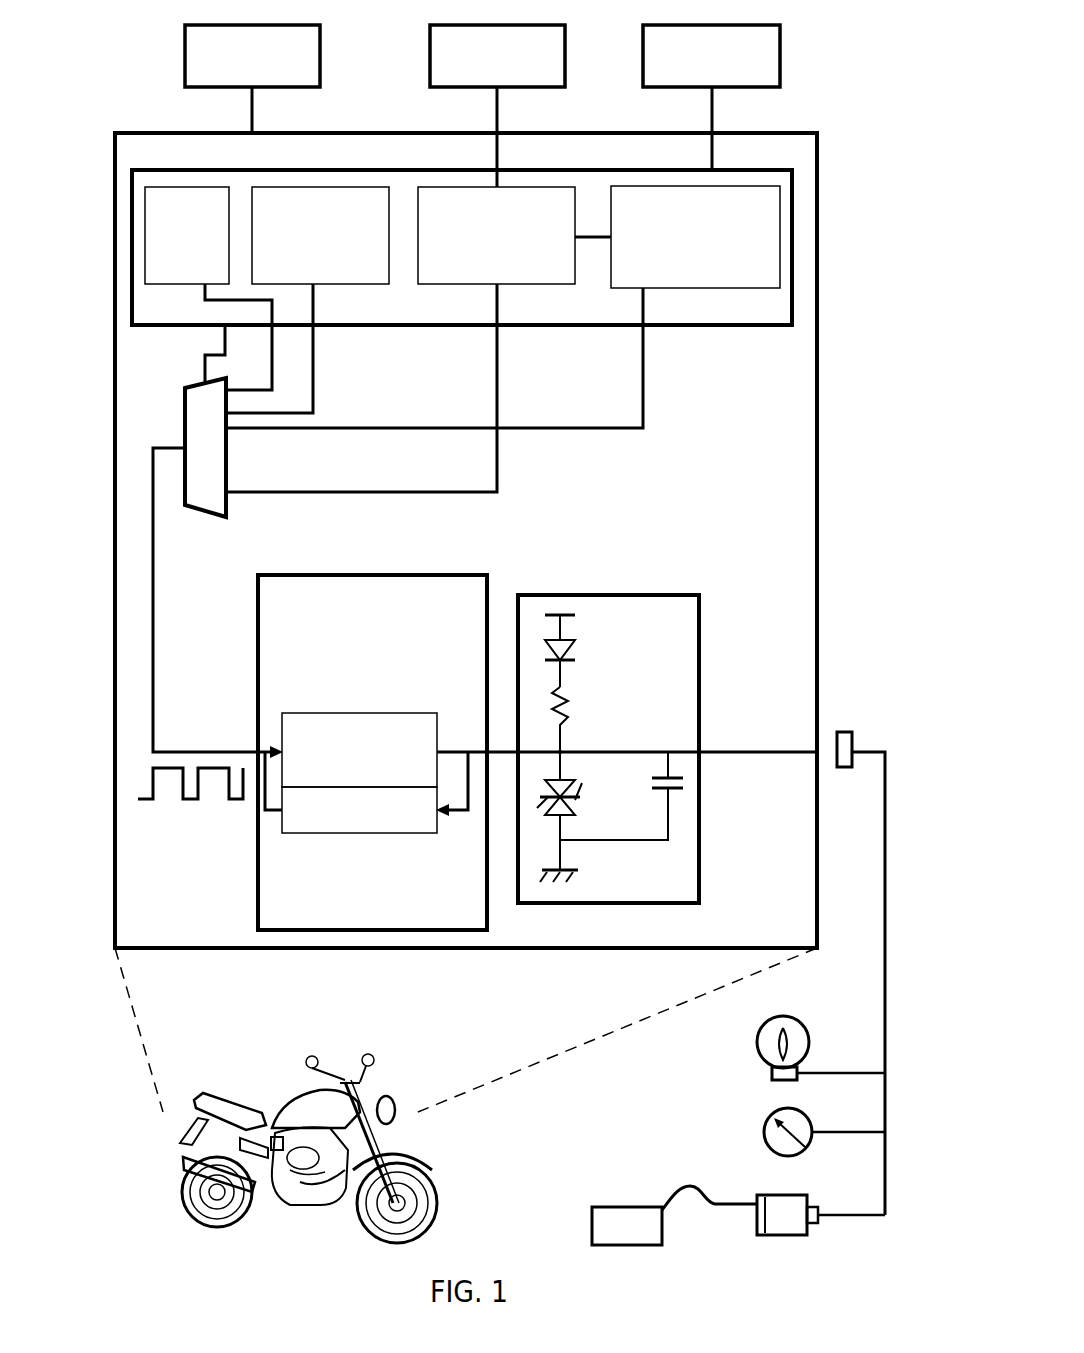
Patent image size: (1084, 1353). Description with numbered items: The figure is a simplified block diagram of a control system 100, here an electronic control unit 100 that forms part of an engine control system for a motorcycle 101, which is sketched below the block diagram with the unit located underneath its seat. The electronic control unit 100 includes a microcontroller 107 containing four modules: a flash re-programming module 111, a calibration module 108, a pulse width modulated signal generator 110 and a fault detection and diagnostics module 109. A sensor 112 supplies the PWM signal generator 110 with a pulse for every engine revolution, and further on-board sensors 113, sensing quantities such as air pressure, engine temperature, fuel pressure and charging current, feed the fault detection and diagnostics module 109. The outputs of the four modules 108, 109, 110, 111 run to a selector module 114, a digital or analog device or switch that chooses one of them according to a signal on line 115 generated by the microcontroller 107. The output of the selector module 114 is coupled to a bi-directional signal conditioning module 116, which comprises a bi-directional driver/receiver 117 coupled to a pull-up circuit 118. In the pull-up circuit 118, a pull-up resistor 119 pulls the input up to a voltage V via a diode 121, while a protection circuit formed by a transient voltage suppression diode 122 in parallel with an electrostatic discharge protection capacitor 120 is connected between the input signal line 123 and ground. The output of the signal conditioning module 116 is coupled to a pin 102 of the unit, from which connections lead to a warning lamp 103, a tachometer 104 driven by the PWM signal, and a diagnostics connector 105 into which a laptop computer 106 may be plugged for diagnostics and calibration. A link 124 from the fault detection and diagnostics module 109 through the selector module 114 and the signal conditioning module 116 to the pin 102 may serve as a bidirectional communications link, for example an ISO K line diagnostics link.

The control system 100 is at (537, 948).
The motorcycle 101 is at (450, 997).
The pin 102 is at (850, 732).
The warning lamp 103 is at (770, 1068).
The tachometer 104 is at (765, 1128).
The diagnostics connector 105 is at (780, 1195).
The laptop computer 106 is at (652, 1207).
The microcontroller 107 is at (672, 325).
The calibration module 108 is at (367, 284).
The fault detection and diagnostics module 109 is at (725, 288).
The pulse width modulated signal generator 110 is at (545, 284).
The flash re-programming module 111 is at (153, 284).
The sensor 112 is at (428, 88).
The on-board sensors 113 is at (185, 48).
The selector module 114 is at (228, 447).
The line 115 is at (225, 338).
The bi-directional signal conditioning module 116 is at (258, 845).
The bi-directional driver/receiver 117 is at (341, 713).
The pull-up circuit 118 is at (700, 892).
The pull-up resistor 119 is at (565, 697).
The electrostatic discharge protection capacitor 120 is at (683, 778).
The diode 121 is at (580, 645).
The transient voltage suppression diode 122 is at (578, 808).
The input signal line 123 is at (540, 752).
The link 124 is at (650, 428).